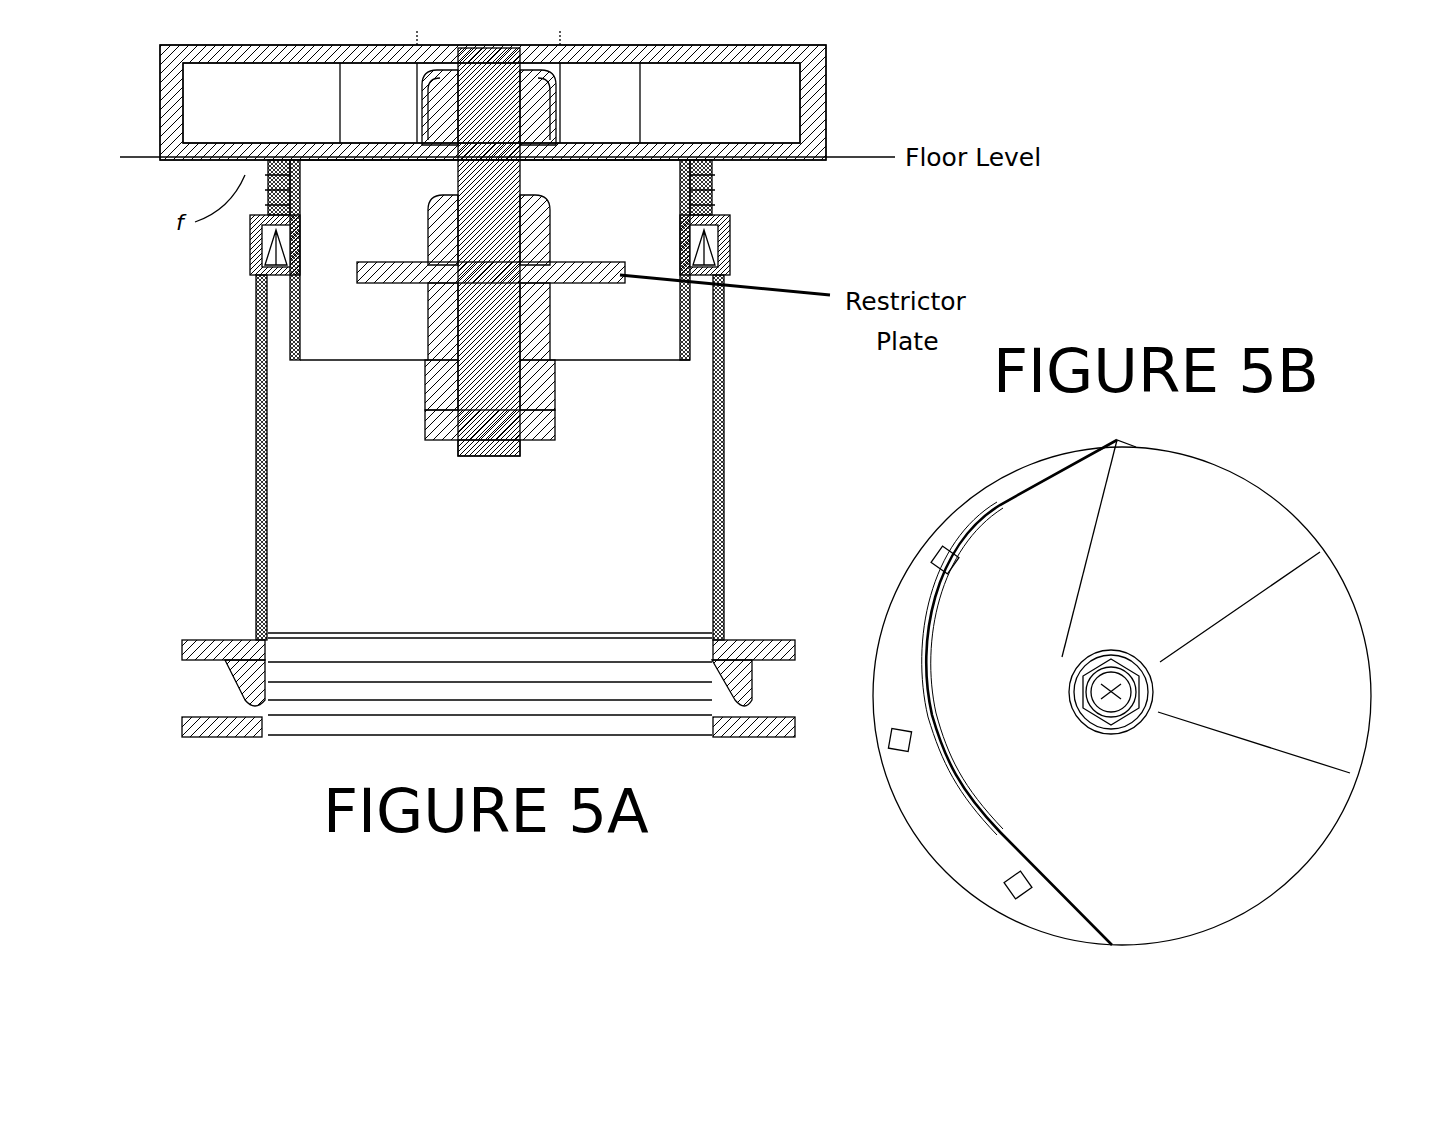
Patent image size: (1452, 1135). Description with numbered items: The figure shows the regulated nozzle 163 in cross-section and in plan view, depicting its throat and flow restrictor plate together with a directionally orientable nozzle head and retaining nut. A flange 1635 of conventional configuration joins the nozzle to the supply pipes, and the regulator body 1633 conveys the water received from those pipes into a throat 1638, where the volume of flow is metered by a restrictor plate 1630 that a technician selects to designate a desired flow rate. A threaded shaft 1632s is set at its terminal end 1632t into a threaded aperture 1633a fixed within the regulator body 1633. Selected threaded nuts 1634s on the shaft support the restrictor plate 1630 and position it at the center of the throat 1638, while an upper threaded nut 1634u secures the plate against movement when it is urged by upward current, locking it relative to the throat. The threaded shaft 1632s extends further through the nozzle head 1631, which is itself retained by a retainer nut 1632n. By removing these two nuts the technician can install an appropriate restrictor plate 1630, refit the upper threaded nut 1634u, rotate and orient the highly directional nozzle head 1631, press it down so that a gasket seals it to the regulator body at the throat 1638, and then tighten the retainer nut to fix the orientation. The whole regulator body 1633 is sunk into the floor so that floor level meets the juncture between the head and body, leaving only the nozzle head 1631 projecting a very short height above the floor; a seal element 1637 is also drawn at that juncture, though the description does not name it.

In FIG. 5A, the regulated nozzle 163 is at (215, 268).
In FIG. 5B, the regulated nozzle 163 is at (945, 868).
In FIG. 5A, the restrictor plate 1630 is at (355, 280).
In FIG. 5A, the nozzle head 1631 is at (820, 105).
In FIG. 5B, the nozzle head 1631 is at (1372, 690).
In FIG. 5A, the retainer nut 1632n is at (420, 128).
In FIG. 5B, the retainer nut 1632n is at (1150, 705).
In FIG. 5A, the threaded shaft 1632s is at (535, 160).
In FIG. 5B, the threaded shaft 1632s is at (1085, 708).
In FIG. 5A, the terminal end 1632t is at (510, 445).
In FIG. 5A, the regulator body 1633 is at (722, 485).
In FIG. 5B, the regulator body 1633 is at (960, 530).
In FIG. 5A, the threaded aperture 1633a is at (440, 440).
In FIG. 5A, the upper threaded nut 1634u is at (552, 240).
In FIG. 5A, the threaded nuts 1634s is at (555, 392).
In FIG. 5A, the flange 1635 is at (798, 650).
In FIG. 5A, the seal 1637 is at (735, 272).
In FIG. 5A, the throat 1638 is at (490, 260).